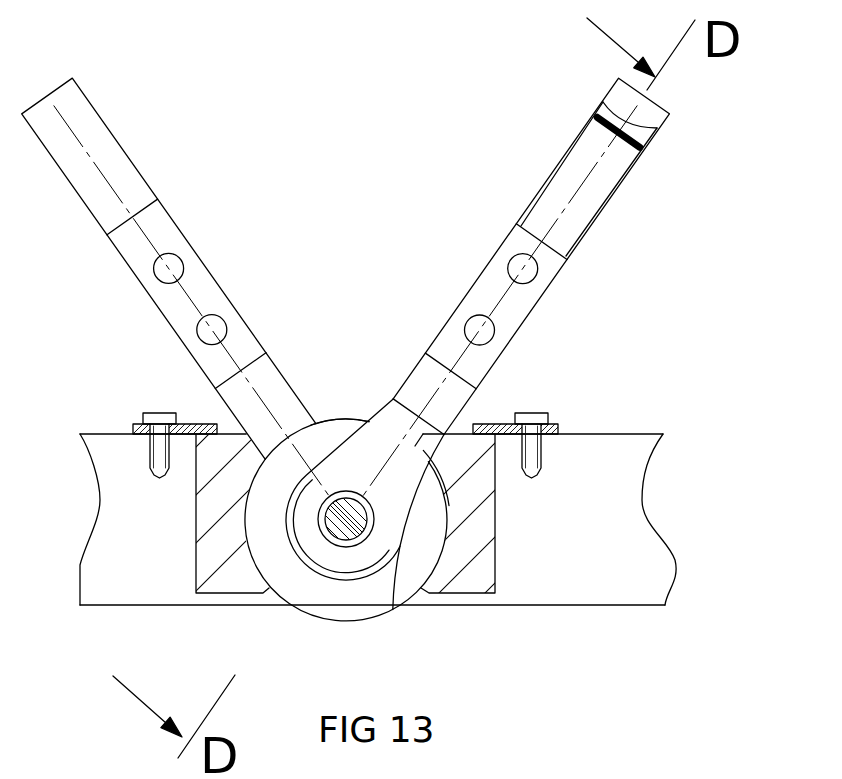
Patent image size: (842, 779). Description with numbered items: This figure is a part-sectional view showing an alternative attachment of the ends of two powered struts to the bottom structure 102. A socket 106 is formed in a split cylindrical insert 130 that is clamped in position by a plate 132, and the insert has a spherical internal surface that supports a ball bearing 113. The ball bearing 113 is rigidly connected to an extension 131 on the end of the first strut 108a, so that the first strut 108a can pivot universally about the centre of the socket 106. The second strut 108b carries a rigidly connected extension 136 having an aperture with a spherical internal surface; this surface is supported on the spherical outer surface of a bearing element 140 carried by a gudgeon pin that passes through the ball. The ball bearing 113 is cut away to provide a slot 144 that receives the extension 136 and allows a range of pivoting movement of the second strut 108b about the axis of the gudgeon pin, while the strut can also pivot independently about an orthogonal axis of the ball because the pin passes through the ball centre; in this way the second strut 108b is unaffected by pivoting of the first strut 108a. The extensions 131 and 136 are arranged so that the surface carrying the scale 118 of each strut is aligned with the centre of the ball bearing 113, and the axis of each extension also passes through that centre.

The bottom structure 102 is at (556, 588).
The socket 106 is at (426, 578).
The first strut 108a is at (176, 287).
The second strut 108b is at (514, 343).
The ball bearing 113 is at (362, 610).
The scale 118 is at (638, 152).
The split cylindrical insert 130 is at (210, 560).
The extension 131 is at (205, 287).
The plate 132 is at (190, 425).
The extension 136 is at (507, 320).
The bearing element 140 is at (327, 540).
The slot 144 is at (332, 432).